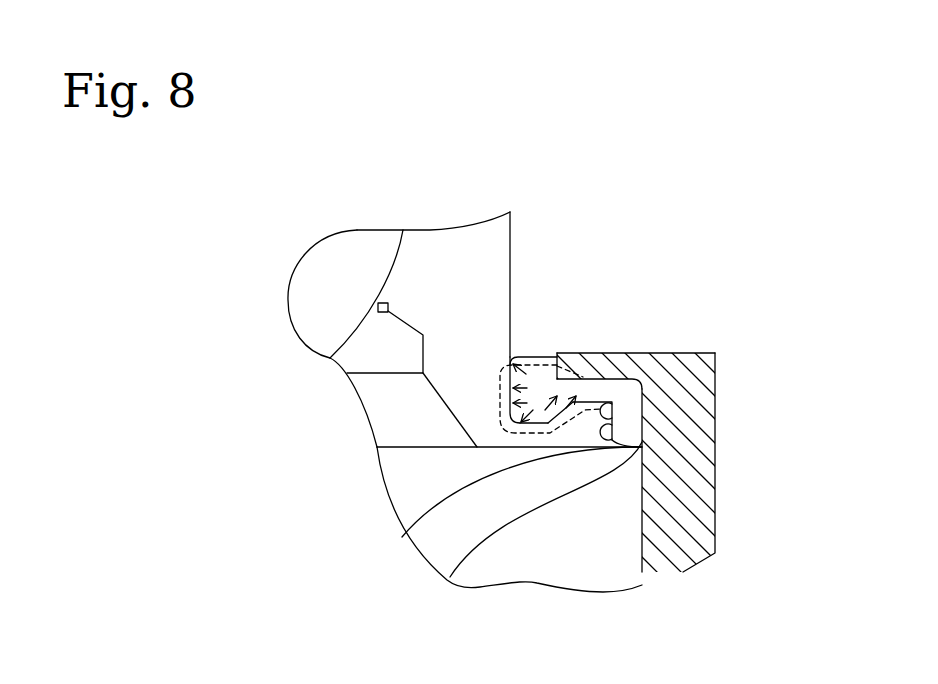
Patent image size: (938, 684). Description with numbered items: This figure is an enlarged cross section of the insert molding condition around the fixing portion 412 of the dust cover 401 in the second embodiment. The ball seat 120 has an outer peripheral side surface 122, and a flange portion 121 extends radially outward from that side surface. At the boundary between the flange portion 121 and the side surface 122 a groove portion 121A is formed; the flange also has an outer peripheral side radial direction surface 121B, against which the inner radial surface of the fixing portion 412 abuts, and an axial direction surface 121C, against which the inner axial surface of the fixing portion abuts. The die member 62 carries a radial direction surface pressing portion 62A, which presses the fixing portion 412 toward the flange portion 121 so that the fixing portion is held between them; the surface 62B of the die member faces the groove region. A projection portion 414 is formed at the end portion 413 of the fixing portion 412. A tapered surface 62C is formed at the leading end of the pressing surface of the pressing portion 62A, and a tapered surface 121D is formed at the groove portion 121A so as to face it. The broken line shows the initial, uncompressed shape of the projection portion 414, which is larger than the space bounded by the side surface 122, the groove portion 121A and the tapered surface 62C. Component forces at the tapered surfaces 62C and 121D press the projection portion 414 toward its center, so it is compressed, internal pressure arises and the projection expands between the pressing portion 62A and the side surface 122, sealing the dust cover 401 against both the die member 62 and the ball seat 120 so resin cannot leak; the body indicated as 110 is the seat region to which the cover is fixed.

The piston head portion 110 is at (308, 288).
The ball seat 120 is at (430, 252).
The side surface of outer peripheral side 122 is at (510, 293).
The end portion 413 is at (510, 378).
The projection portion 414 is at (532, 372).
The fixing portion 412 is at (546, 350).
The dust cover 401 is at (438, 550).
The flange portion 121 is at (560, 425).
The groove portion 121A is at (534, 424).
The outer peripheral side radial direction surface 121B is at (653, 355).
The axial direction surface 121C is at (693, 447).
The tapered surface 121D is at (580, 428).
The die member 62 is at (693, 527).
The radial direction surface pressing portion 62A is at (559, 383).
The groove side surface 62B is at (643, 408).
The tapered surface 62C is at (551, 376).